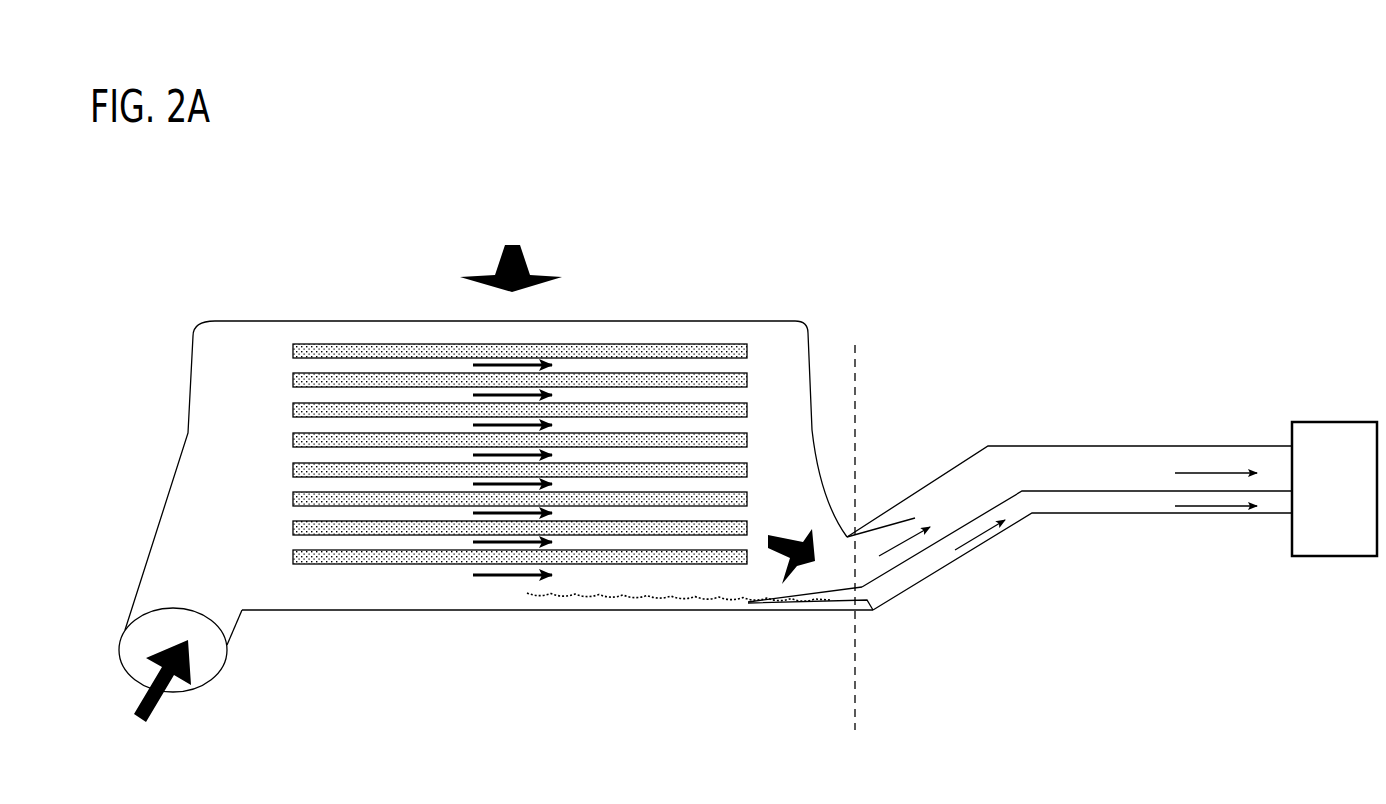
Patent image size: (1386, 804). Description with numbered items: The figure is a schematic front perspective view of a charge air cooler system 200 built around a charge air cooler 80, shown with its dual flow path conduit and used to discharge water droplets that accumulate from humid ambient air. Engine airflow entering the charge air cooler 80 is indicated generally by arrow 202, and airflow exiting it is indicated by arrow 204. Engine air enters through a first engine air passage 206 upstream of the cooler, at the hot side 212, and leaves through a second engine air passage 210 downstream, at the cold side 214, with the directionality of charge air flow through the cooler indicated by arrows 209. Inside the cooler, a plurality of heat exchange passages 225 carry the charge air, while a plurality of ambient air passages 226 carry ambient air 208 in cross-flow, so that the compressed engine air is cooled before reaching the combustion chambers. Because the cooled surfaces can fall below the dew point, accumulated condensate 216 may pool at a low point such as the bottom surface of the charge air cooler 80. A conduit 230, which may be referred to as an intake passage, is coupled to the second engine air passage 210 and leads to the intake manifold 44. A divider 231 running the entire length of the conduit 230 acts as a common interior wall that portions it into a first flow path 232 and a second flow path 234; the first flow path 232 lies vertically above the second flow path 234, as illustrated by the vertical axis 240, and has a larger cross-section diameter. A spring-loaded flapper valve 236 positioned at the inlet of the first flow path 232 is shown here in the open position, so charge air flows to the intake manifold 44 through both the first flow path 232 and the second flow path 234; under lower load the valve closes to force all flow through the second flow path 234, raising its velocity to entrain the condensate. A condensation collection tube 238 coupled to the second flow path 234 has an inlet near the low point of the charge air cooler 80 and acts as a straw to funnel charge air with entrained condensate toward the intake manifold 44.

The intake manifold 44 is at (1346, 501).
The charge air cooler 80 is at (356, 320).
The charge air cooler system 200 is at (922, 183).
The arrow indicating engine airflow entering charge air cooler 202 is at (139, 715).
The arrow indicating engine airflow exiting charge air cooler 204 is at (811, 528).
The first engine air passage 206 is at (171, 591).
The ambient air 208 is at (470, 277).
The arrows indicating directionality of charge air flow 209 is at (493, 575).
The second engine air passage 210 is at (814, 583).
The hot side 212 is at (263, 285).
The cold side 214 is at (722, 295).
The accumulated condensate 216 is at (644, 602).
The heat exchange passages 225 is at (290, 538).
The ambient air passages 226 is at (293, 350).
The conduit 230 is at (1030, 446).
The divider 231 is at (962, 527).
The first flow path 232 is at (1047, 485).
The second flow path 234 is at (1047, 515).
The valve 236 is at (880, 530).
The condensation collection tube 238 is at (845, 600).
The vertical axis 240 is at (856, 395).